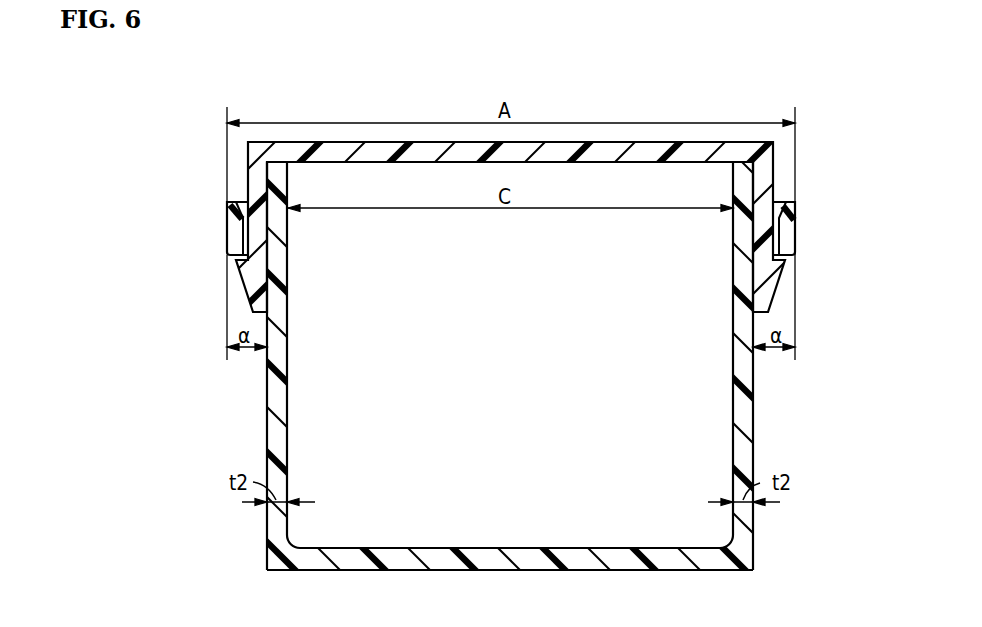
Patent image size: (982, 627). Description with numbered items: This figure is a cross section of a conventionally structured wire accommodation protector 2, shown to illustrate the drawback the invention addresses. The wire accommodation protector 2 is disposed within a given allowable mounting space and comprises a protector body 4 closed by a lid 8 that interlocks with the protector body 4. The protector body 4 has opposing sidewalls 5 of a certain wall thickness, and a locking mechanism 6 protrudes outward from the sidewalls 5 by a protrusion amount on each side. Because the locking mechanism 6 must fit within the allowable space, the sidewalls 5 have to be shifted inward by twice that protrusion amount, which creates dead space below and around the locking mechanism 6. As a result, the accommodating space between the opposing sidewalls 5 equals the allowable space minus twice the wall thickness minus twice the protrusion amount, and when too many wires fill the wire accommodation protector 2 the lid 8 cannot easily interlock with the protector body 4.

The wire accommodation protector 2 is at (779, 93).
The protector body 4 is at (783, 397).
The sidewalls 5 is at (282, 440).
The locking mechanism 6 is at (222, 208).
The lid 8 is at (653, 149).